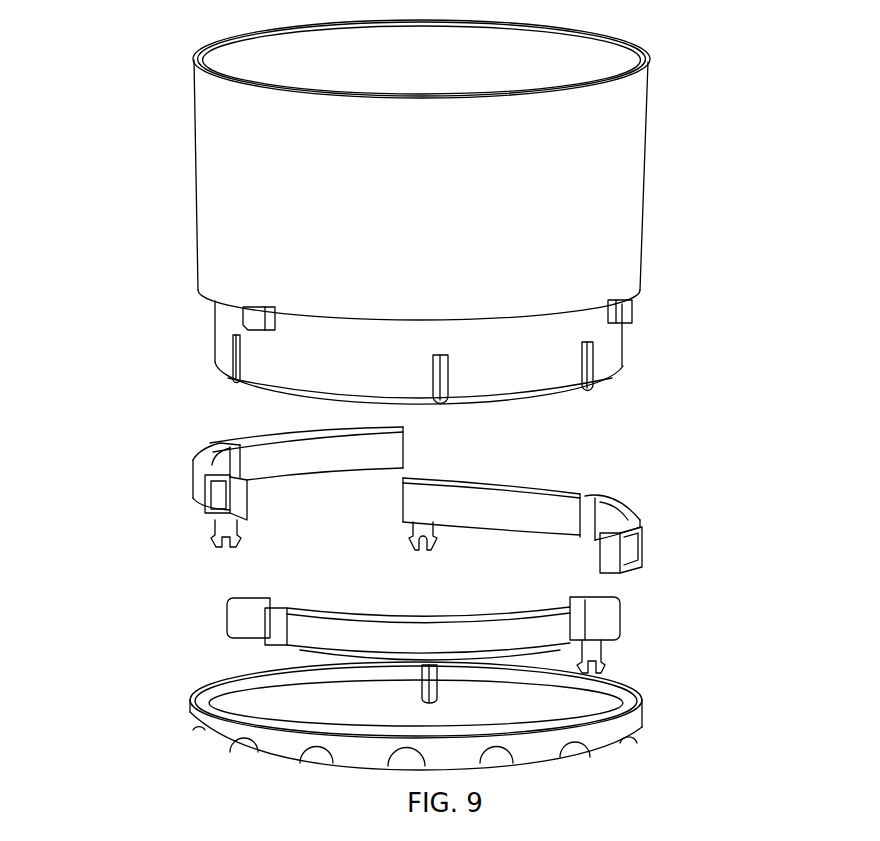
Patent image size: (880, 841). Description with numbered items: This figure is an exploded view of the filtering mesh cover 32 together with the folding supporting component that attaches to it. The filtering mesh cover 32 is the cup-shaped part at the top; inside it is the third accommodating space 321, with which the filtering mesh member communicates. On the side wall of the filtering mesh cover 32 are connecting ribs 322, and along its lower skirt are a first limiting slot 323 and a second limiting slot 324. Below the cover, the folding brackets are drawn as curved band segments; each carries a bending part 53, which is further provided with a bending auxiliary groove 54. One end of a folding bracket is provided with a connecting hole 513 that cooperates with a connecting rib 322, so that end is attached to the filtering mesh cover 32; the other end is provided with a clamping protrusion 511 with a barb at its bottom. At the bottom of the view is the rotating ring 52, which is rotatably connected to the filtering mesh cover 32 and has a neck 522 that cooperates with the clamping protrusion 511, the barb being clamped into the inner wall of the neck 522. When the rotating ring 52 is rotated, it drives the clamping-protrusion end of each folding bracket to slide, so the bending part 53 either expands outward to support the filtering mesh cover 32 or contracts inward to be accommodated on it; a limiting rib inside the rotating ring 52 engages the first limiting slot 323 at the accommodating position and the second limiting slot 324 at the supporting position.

The filtering mesh cover 32 is at (222, 218).
The third accommodating space 321 is at (260, 72).
The connecting rib 322 is at (245, 312).
The first limiting slot 323 is at (447, 392).
The second limiting slot 324 is at (237, 359).
The bending part 53 is at (225, 466).
The clamping protrusion 511 is at (210, 518).
The bending auxiliary groove 54 is at (409, 539).
The connecting hole 513 is at (637, 520).
The rotating ring 52 is at (409, 706).
The neck 522 is at (193, 705).